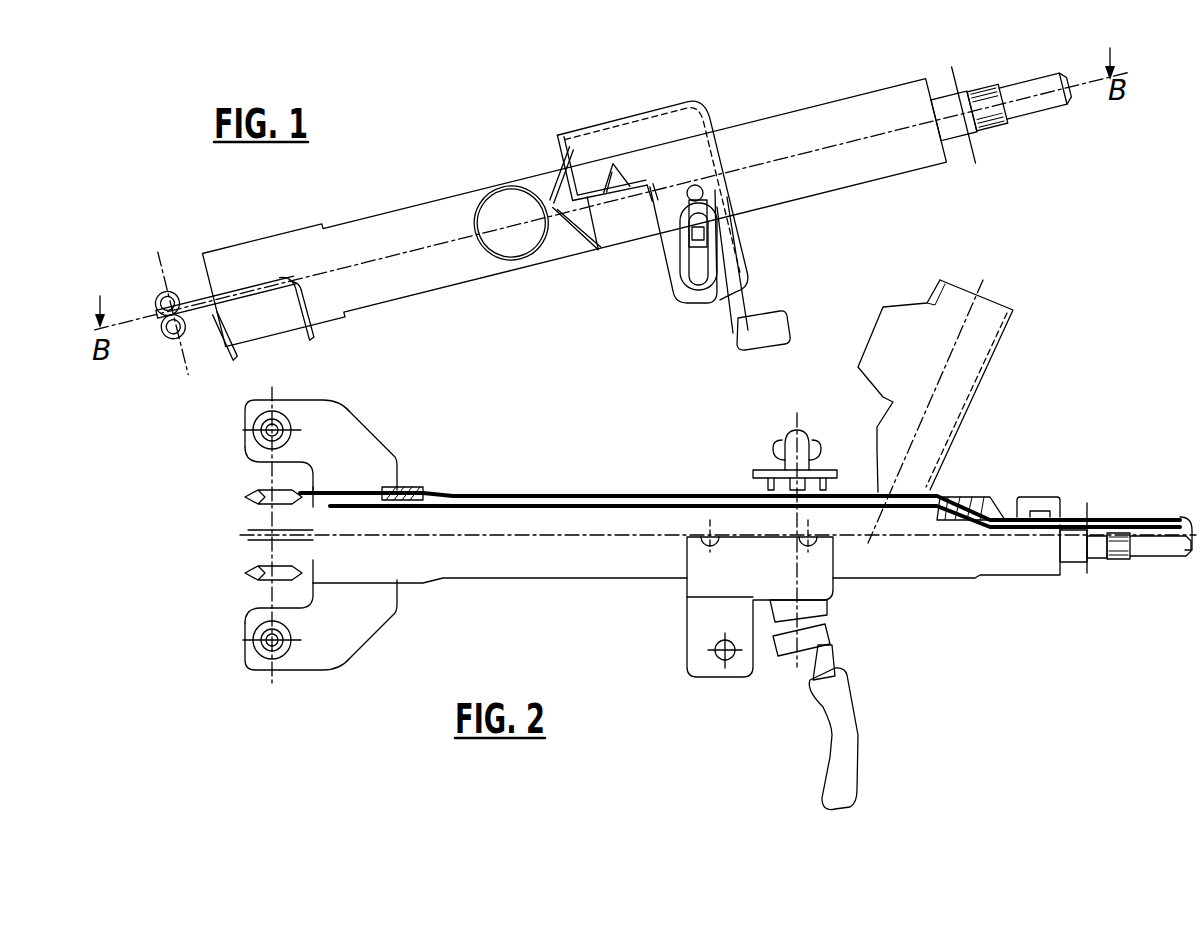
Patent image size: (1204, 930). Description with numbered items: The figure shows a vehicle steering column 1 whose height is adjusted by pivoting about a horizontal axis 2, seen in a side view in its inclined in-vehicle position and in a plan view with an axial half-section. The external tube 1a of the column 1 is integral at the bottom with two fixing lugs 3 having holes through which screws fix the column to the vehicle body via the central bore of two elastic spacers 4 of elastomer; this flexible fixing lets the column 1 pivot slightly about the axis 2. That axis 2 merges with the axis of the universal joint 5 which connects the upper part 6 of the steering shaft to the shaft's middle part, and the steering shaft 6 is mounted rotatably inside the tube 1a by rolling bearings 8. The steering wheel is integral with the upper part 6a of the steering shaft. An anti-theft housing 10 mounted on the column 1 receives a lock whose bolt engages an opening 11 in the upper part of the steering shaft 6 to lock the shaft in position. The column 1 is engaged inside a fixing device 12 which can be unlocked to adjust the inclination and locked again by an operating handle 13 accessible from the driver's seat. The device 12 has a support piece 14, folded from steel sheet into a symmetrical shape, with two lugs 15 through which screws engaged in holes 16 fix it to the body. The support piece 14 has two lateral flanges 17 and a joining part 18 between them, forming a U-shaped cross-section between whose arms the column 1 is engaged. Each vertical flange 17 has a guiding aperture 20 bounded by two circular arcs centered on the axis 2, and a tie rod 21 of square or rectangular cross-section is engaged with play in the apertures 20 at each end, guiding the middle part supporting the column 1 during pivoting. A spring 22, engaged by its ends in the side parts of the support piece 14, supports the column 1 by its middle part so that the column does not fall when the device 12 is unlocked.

In FIG. 1, the steering column 1 is at (427, 296).
In FIG. 2, the steering column 1 is at (524, 490).
In FIG. 2, the external tube 1a is at (462, 483).
In FIG. 2, the horizontal axis 2 is at (272, 548).
In FIG. 1, the fixing lugs 3 is at (283, 300).
In FIG. 2, the fixing lugs 3 is at (363, 437).
In FIG. 2, the elastic spacers 4 is at (254, 421).
In FIG. 1, the universal joint 5 is at (168, 332).
In FIG. 2, the universal joint 5 is at (257, 571).
In FIG. 2, the upper part of the steering shaft 6 is at (569, 503).
In FIG. 1, the upper part of the steering shaft 6a is at (1031, 90).
In FIG. 2, the upper part of the steering shaft 6a is at (1125, 538).
In FIG. 2, the rolling bearings 8 is at (407, 487).
In FIG. 2, the anti-theft housing 10 is at (1007, 333).
In FIG. 2, the opening 11 is at (905, 512).
In FIG. 1, the fixing device 12 is at (746, 245).
In FIG. 2, the fixing device 12 is at (739, 678).
In FIG. 1, the operating handle 13 is at (768, 312).
In FIG. 2, the operating handle 13 is at (845, 718).
In FIG. 1, the support piece 14 is at (643, 130).
In FIG. 2, the lugs 15 is at (695, 640).
In FIG. 2, the holes 16 is at (722, 657).
In FIG. 1, the lateral flanges 17 is at (688, 296).
In FIG. 2, the joining part 18 is at (731, 550).
In FIG. 1, the guiding aperture 20 is at (697, 266).
In FIG. 2, the tie rod 21 is at (820, 480).
In FIG. 1, the spring 22 is at (481, 207).